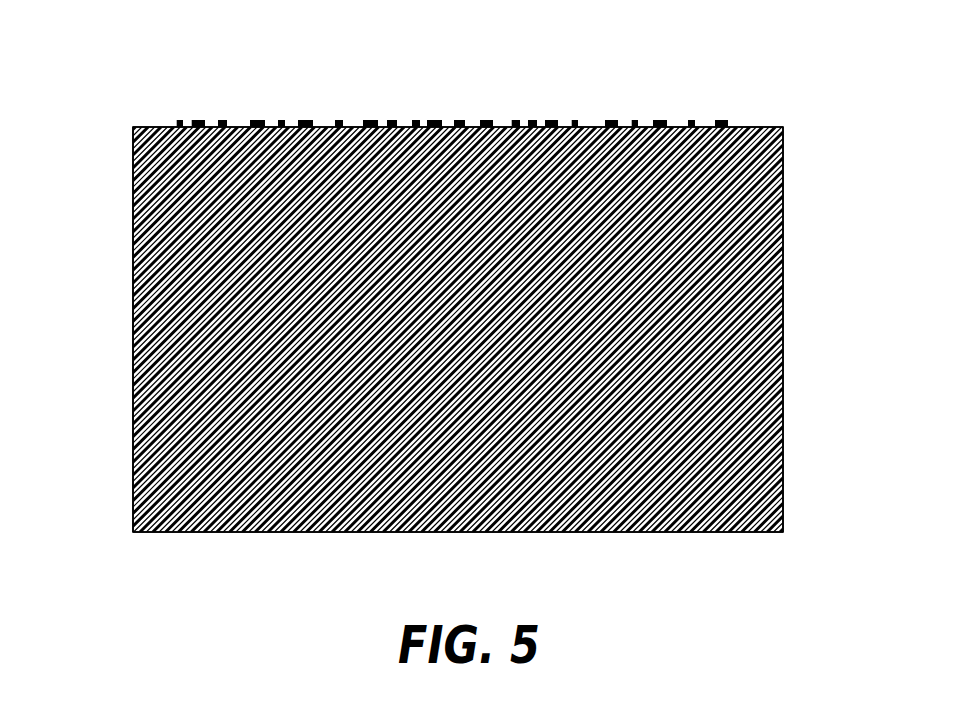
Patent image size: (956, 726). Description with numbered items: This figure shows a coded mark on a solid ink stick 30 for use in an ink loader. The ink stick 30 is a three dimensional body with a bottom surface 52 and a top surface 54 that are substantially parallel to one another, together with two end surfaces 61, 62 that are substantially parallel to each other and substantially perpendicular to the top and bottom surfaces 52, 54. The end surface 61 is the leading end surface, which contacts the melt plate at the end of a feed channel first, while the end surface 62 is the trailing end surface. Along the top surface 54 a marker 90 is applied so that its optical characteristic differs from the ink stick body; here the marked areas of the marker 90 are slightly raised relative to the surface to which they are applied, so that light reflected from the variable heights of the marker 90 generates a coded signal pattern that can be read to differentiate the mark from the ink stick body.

The solid ink stick 30 is at (90, 128).
The bottom surface 52 is at (250, 533).
The top surface 54 is at (759, 127).
The leading end surface 61 is at (133, 343).
The trailing end surface 62 is at (783, 343).
The marker 90 is at (248, 97).